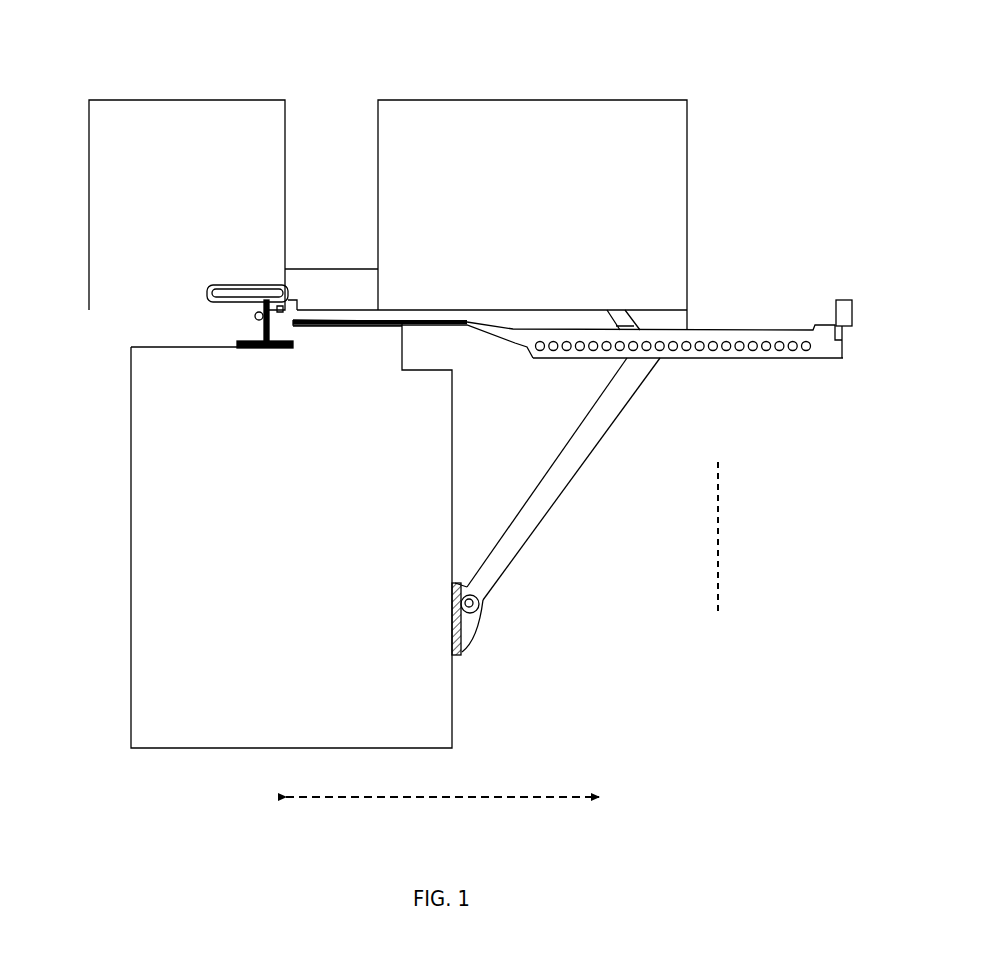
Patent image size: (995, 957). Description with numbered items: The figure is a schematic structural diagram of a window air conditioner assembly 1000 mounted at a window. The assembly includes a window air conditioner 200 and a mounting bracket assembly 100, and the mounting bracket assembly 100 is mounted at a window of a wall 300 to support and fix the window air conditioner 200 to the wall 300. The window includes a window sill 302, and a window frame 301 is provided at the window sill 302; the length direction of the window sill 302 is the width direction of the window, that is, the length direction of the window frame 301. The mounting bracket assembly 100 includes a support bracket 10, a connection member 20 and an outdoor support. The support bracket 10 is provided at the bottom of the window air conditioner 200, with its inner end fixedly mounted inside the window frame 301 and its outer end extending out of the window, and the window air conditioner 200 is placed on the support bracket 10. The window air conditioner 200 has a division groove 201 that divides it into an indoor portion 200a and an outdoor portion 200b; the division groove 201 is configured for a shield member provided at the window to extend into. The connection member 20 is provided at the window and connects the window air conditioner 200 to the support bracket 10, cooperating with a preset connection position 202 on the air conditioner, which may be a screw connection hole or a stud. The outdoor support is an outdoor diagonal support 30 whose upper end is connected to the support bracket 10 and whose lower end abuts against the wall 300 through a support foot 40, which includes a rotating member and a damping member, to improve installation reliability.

The window air conditioner assembly 1000 is at (762, 117).
The window air conditioner 200 is at (634, 114).
The indoor portion 200a is at (188, 123).
The outdoor portion 200b is at (515, 125).
The division groove 201 is at (334, 112).
The preset connection position 202 is at (240, 293).
The connection member 20 is at (213, 293).
The support bracket 10 is at (740, 330).
The mounting bracket assembly 100 is at (798, 366).
The outdoor diagonal support 30 is at (541, 507).
The support foot 40 is at (463, 637).
The wall 300 is at (148, 521).
The window frame 301 is at (337, 330).
The window sill 302 is at (181, 347).